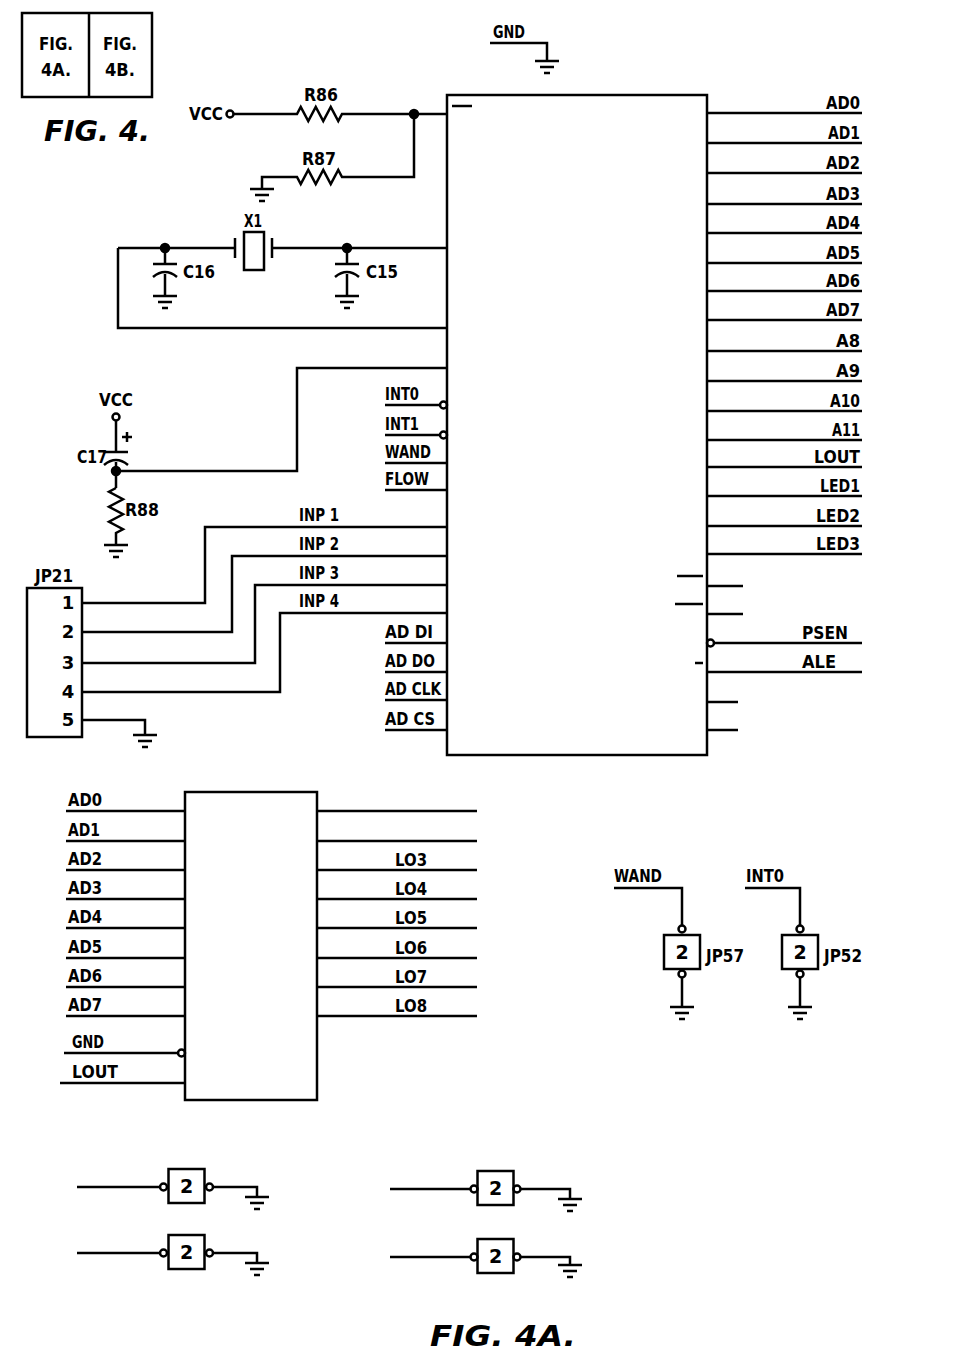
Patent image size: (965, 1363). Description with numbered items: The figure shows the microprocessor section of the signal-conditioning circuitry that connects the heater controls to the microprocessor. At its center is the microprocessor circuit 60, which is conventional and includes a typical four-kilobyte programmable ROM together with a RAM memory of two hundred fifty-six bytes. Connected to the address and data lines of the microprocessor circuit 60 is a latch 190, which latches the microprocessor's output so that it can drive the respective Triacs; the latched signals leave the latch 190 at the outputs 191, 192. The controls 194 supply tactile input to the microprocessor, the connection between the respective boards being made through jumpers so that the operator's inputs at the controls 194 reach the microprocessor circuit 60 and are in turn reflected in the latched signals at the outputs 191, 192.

The microprocessor circuit 60 is at (625, 95).
The latch 190 is at (262, 792).
The output 191 is at (490, 802).
The output 192 is at (490, 832).
The controls 194 is at (592, 1280).